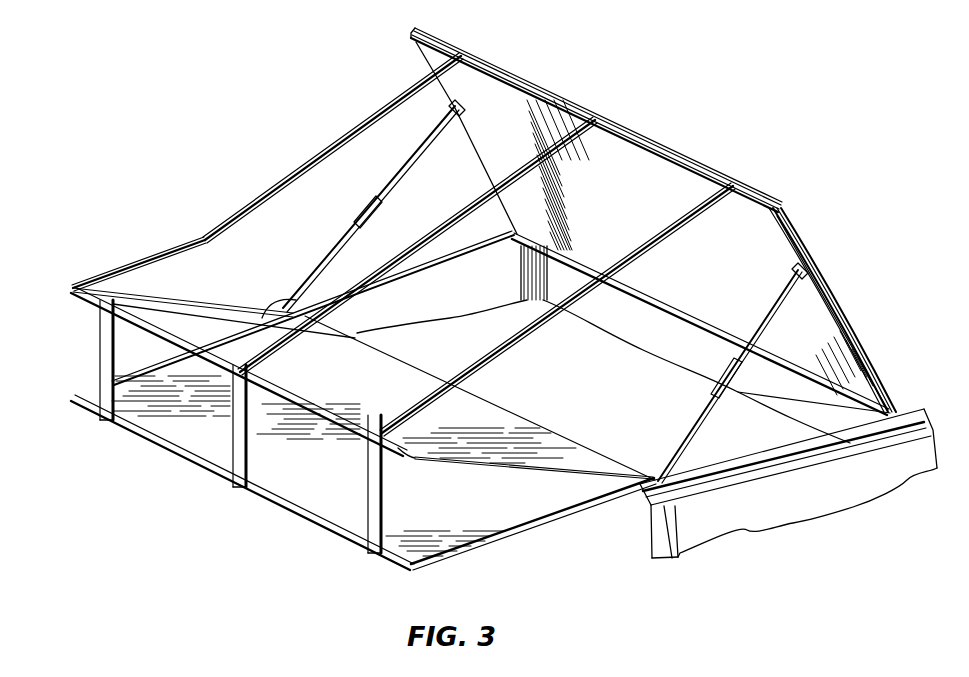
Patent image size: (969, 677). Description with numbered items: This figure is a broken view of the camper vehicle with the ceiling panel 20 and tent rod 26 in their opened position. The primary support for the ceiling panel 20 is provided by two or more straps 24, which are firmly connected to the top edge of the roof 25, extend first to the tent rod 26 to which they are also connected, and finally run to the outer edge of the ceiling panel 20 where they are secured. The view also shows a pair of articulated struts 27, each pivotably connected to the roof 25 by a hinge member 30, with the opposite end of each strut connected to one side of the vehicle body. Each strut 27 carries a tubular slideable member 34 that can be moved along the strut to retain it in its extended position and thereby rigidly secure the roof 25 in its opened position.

The ceiling panel 20 is at (474, 523).
The straps 24 is at (318, 156).
The roof 25 is at (693, 160).
The tent rod 26 is at (342, 418).
The articulated struts 27 is at (405, 168).
The hinge member 30 is at (462, 112).
The tubular slideable member 34 is at (364, 209).